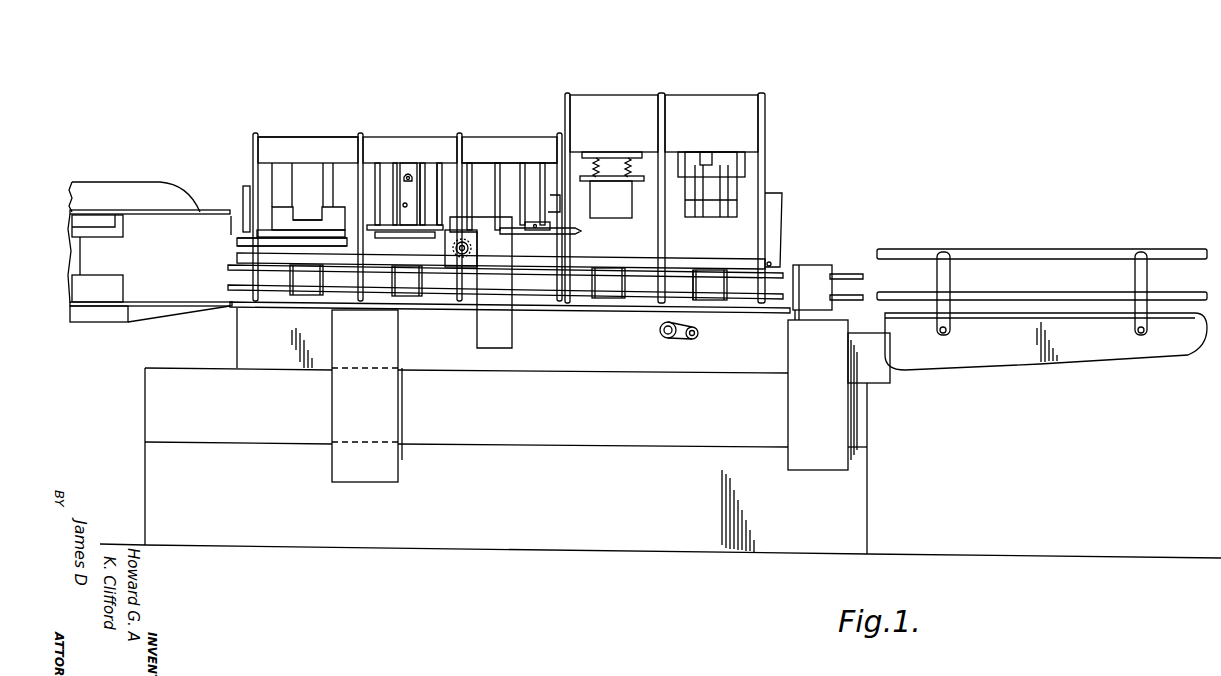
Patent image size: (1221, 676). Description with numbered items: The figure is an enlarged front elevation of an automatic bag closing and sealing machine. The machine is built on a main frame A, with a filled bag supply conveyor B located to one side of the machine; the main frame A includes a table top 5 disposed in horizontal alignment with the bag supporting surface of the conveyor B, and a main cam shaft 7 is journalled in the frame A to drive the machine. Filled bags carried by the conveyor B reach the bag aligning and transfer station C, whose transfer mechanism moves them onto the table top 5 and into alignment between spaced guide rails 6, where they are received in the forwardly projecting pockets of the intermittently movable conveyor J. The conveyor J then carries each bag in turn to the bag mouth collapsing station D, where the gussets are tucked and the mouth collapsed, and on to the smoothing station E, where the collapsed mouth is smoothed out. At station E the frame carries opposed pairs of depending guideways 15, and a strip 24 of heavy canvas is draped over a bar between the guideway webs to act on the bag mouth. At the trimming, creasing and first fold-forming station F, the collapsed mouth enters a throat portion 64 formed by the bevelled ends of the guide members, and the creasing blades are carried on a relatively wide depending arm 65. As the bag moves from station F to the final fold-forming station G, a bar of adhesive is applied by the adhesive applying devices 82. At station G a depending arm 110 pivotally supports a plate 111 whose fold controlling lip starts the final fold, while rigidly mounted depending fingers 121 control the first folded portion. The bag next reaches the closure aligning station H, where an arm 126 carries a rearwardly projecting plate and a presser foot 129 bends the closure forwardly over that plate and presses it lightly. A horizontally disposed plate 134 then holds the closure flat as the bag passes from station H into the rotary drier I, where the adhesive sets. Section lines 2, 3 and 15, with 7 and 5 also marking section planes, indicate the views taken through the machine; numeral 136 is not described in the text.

The main frame A is at (876, 458).
The filled bag supply conveyor B is at (1027, 372).
The filled bag aligning and transfer station C is at (821, 262).
The bag mouth collapsing station D is at (724, 91).
The smoothing station E is at (634, 91).
The trimming, creasing and first fold-forming station F is at (526, 131).
The final fold-forming station G is at (412, 131).
The closure aligning station H is at (321, 108).
The rotary drier I is at (121, 176).
The intermittently movable conveyor J is at (589, 290).
The section line 2- 2 is at (618, 75).
The section line 3- 3 is at (514, 125).
The table top 5 is at (623, 326).
The guide rails 6 is at (683, 298).
The main cam shaft 7 is at (437, 125).
The guideways 15 is at (348, 125).
The strip of heavy textile material 24 is at (612, 185).
The throat portion 64 is at (578, 236).
The depending arm 65 is at (511, 183).
The adhesive applying devices 82 is at (471, 263).
The depending arm 110 is at (404, 168).
The plate 111 is at (434, 225).
The depending fingers 121 is at (441, 159).
The arm 126 is at (328, 160).
The presser foot 129 is at (343, 214).
The horizontally disposed plate 134 is at (258, 235).
The bar 136 is at (278, 234).